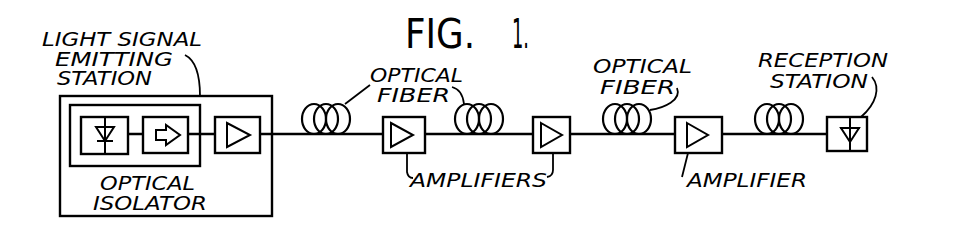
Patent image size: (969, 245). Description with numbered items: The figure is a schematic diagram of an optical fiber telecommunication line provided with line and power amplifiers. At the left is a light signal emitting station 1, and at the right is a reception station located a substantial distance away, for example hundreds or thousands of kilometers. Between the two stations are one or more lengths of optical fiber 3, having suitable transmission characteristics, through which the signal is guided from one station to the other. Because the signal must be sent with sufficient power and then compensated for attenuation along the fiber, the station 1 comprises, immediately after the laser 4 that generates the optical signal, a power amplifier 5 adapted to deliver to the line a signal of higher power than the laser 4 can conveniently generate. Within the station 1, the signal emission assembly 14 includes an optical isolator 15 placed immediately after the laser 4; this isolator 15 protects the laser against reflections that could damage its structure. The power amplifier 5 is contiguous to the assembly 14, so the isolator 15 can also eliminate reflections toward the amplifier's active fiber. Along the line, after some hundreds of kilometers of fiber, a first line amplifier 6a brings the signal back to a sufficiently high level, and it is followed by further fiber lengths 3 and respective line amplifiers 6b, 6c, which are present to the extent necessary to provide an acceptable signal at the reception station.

The light signal emitting station 1 is at (77, 131).
The laser 4 is at (99, 154).
The power amplifier 5 is at (242, 153).
The signal emission assembly 14 is at (235, 96).
The optical isolator 15 is at (198, 120).
The optical fiber 3 is at (333, 104).
The first line amplifier 6a is at (383, 152).
The line amplifier 6b is at (562, 117).
The line amplifier 6c is at (675, 153).